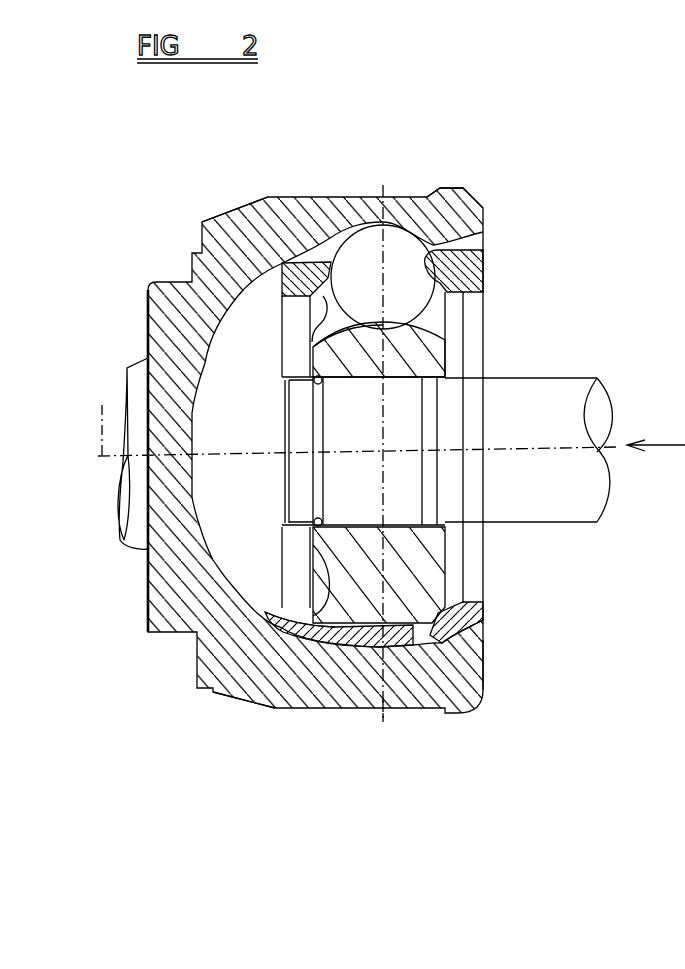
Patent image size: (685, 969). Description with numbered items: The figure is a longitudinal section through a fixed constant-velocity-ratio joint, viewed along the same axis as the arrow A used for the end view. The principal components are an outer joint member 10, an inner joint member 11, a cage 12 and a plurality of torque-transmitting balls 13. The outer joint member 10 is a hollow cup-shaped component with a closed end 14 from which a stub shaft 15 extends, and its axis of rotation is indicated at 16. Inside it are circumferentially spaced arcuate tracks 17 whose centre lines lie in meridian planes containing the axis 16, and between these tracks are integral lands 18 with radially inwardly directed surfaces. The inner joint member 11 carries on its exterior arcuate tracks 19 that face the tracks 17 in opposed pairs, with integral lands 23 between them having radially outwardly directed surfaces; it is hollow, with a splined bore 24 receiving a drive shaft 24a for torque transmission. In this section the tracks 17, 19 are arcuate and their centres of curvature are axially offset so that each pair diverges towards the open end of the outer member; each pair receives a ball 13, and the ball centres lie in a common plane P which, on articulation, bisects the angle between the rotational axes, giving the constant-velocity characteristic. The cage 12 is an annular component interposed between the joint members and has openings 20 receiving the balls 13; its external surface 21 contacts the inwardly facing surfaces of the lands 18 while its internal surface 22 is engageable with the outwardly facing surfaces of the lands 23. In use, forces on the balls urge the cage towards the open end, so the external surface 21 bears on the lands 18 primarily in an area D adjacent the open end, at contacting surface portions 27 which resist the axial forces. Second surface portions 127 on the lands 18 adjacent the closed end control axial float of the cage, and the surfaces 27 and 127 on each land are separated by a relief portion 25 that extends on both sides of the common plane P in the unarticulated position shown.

The outer joint member 10 is at (272, 690).
The inner joint member 11 is at (427, 577).
The cage 12 is at (280, 612).
The torque-transmitting balls 13 is at (357, 255).
The closed end 14 is at (160, 592).
The stub shaft 15 is at (142, 505).
The axis of rotation 16 is at (102, 405).
The arcuate tracks 17 is at (445, 238).
The lands 18 is at (440, 645).
The arcuate tracks 19 is at (427, 325).
The openings 20 is at (477, 250).
The external surface 21 is at (278, 262).
The internal surface 22 is at (310, 332).
The lands 23 is at (330, 585).
The splined bore 24 is at (367, 379).
The drive shaft 24a is at (563, 397).
The relief portion 25 is at (373, 690).
The contacting surface portions 27 is at (470, 682).
The second surface portions 127 is at (230, 685).
The arrow A is at (655, 443).
The area D is at (462, 668).
The common plane P is at (383, 722).